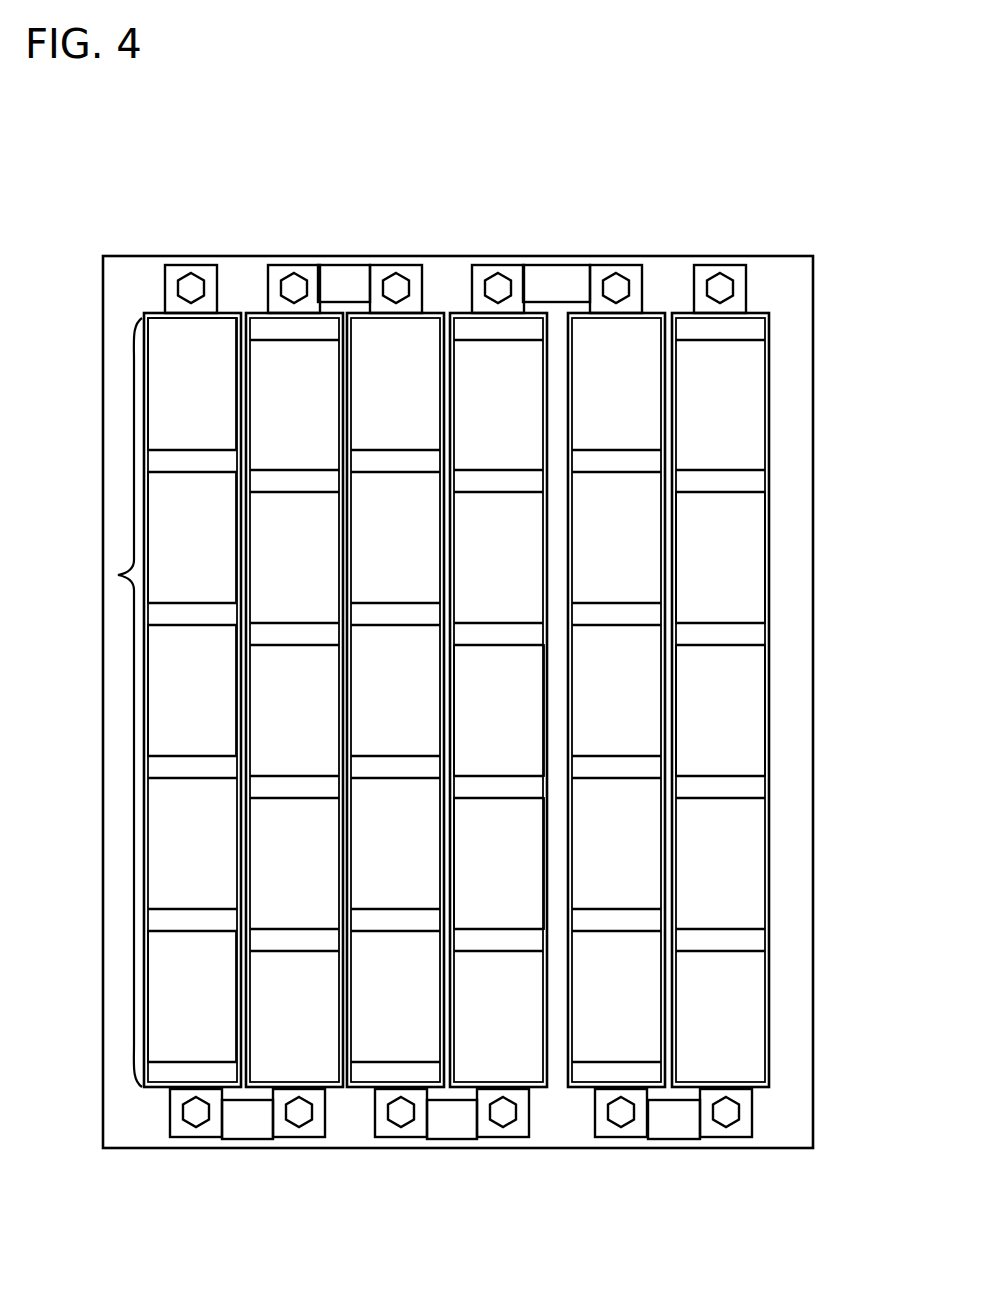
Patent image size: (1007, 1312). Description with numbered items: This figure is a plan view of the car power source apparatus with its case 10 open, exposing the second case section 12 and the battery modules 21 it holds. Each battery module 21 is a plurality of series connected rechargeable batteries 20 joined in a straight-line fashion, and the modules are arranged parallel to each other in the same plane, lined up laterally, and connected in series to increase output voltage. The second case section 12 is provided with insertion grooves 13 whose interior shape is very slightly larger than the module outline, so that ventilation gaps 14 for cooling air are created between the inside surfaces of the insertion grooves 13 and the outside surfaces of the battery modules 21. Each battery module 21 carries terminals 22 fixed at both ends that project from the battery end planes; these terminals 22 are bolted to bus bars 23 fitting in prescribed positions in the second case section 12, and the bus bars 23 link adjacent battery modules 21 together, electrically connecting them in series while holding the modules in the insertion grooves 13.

The case 10 is at (474, 699).
The second case section 12 is at (792, 683).
The insertion grooves 13 is at (162, 526).
The ventilation gaps 14 is at (160, 566).
The rechargeable batteries 20 is at (170, 420).
The battery module 21 is at (147, 702).
The terminals 22 is at (205, 272).
The bus bars 23 is at (355, 272).